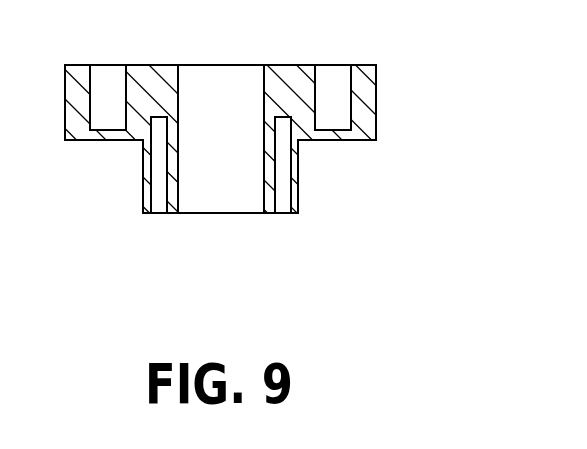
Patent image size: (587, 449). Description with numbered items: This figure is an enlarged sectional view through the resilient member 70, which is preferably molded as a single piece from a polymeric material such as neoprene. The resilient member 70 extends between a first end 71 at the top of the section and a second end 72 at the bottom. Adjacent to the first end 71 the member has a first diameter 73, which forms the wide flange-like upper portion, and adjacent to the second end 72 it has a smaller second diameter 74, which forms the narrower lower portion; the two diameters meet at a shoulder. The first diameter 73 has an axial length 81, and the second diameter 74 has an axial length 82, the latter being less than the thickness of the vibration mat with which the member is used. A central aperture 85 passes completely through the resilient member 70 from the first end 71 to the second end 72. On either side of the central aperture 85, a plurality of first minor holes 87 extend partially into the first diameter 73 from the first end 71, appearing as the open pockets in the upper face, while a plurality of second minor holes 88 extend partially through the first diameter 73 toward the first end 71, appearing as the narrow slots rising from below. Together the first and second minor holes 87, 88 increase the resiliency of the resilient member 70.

The resilient member 70 is at (272, 65).
The first end 71 is at (65, 65).
The first diameter 73 is at (65, 104).
The axial length 81 is at (377, 108).
The first minor holes 87 is at (337, 85).
The central aperture 85 is at (180, 80).
The second minor holes 88 is at (290, 240).
The second diameter 74 is at (145, 182).
The axial length 82 is at (295, 177).
The second end 72 is at (142, 213).